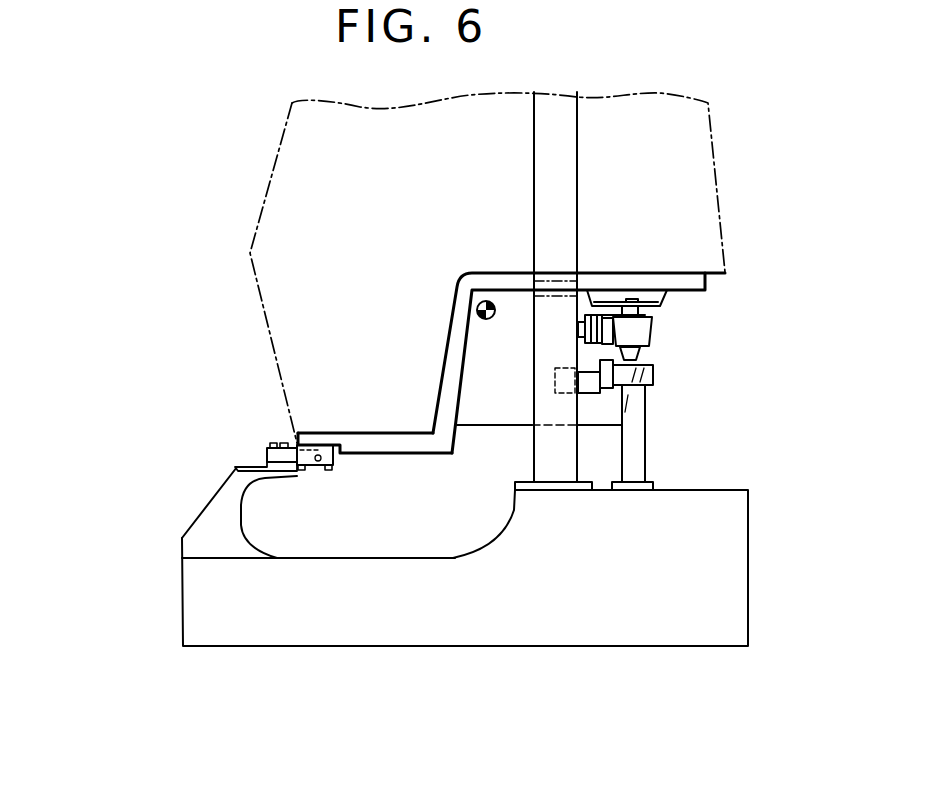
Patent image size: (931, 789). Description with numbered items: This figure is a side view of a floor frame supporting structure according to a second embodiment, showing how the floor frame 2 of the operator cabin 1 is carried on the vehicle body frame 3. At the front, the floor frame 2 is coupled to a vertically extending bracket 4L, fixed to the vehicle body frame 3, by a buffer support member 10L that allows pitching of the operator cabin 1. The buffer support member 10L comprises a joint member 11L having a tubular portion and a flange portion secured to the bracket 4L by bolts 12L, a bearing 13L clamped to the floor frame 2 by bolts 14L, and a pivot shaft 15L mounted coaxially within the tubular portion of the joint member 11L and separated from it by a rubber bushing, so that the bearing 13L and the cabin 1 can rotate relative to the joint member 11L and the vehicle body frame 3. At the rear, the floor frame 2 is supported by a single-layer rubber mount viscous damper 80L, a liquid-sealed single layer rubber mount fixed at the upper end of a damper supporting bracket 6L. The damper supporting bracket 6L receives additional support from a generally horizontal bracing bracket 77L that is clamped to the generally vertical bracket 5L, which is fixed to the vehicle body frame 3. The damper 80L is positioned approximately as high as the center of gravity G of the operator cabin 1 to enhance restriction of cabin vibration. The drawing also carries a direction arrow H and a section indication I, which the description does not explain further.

The operator cabin 1 is at (270, 203).
The floor frame 2 is at (443, 347).
The vehicle body frame 3 is at (555, 637).
The bracket 4L is at (232, 550).
The bracket 5L is at (573, 452).
The damper supporting bracket 6L is at (645, 470).
The buffer support member 10L is at (178, 408).
The joint member 11L is at (268, 450).
The bolts 12L is at (273, 441).
The bearing 13L is at (270, 462).
The bolts 14L is at (220, 458).
The pivot shaft 15L is at (328, 463).
The bracing bracket 77L is at (653, 380).
The single-layer rubber mount viscous damper 80L is at (642, 335).
The center of gravity G is at (486, 320).
The direction arrow H is at (777, 372).
The section line I is at (610, 316).